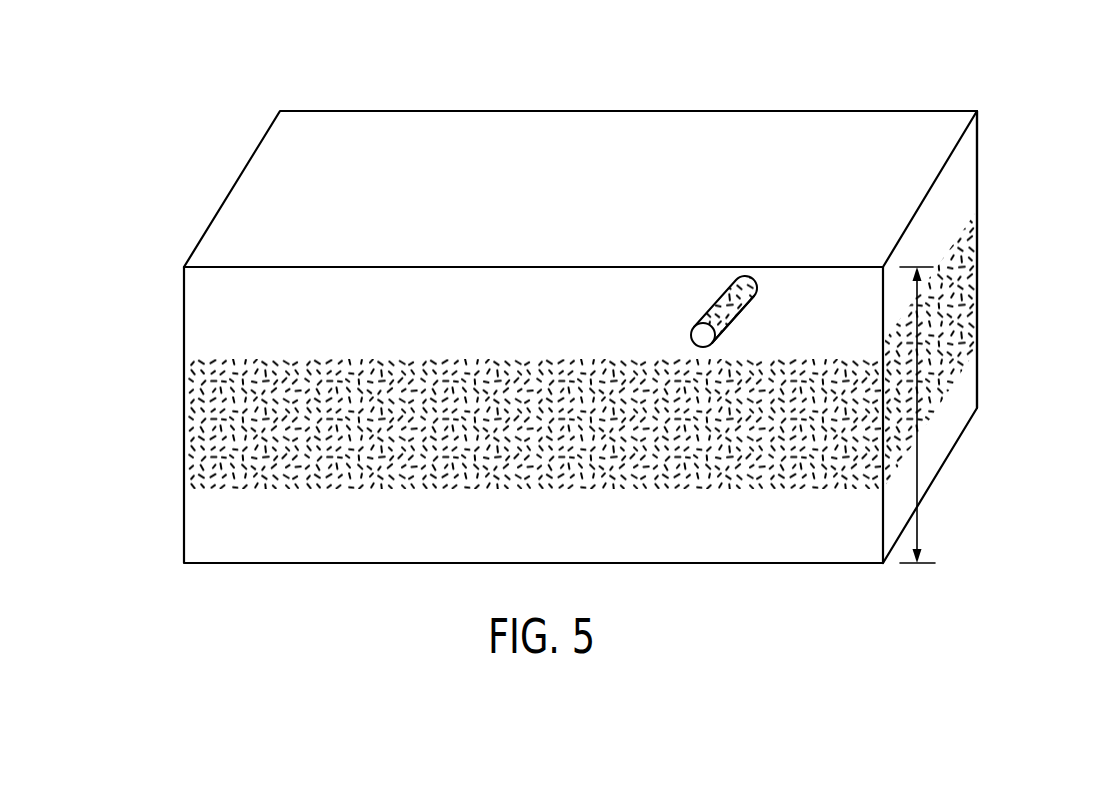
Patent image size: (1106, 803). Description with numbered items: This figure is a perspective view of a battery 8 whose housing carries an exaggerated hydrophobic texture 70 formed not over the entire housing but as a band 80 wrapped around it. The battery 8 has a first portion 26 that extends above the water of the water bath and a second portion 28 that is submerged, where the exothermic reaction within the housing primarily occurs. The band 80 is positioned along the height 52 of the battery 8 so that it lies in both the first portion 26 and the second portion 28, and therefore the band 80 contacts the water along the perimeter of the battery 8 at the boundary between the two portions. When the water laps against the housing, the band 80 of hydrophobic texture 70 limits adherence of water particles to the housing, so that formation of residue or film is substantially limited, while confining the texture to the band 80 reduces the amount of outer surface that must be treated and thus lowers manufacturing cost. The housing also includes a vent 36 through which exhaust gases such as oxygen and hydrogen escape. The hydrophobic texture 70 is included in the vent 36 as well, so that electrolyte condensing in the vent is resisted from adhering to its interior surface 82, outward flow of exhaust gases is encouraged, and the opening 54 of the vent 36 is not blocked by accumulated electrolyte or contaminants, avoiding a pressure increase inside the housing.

The battery 8 is at (840, 72).
The first portion 26 is at (985, 163).
The second portion 28 is at (984, 370).
The band 80 is at (957, 297).
The hydrophobic texture 70 is at (497, 458).
The height 52 is at (918, 452).
The vent 36 is at (714, 305).
The interior surface 82 is at (702, 334).
The opening 54 is at (716, 348).